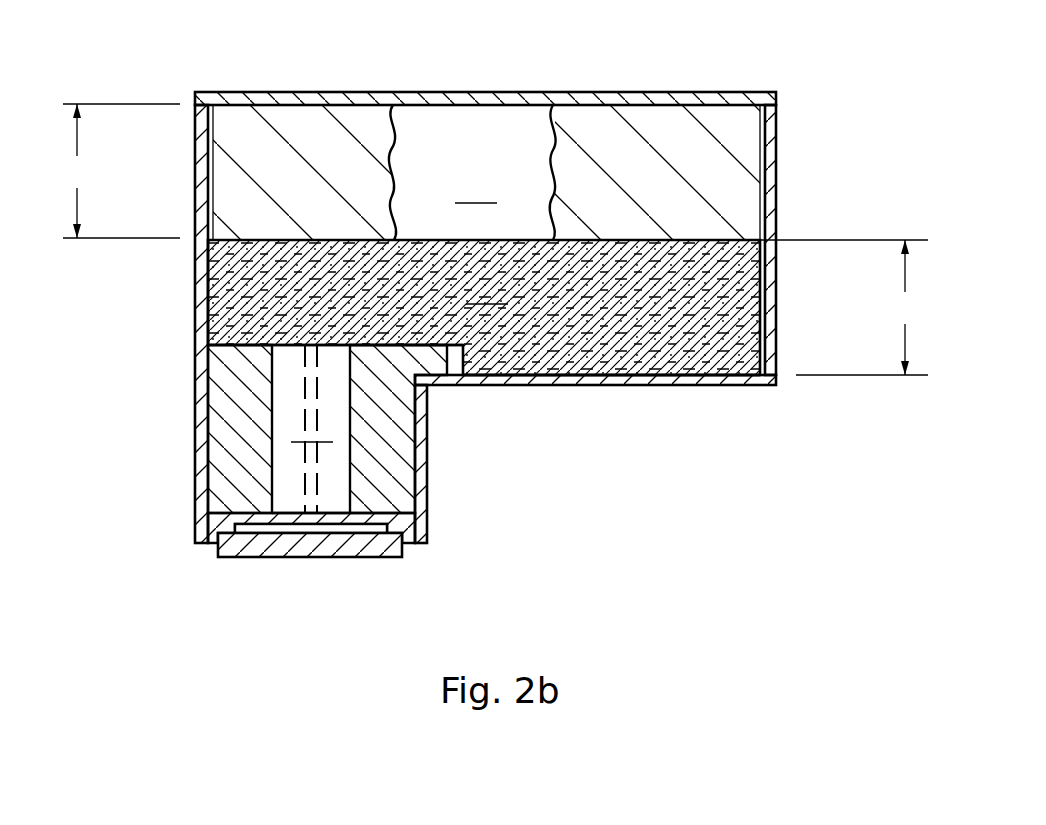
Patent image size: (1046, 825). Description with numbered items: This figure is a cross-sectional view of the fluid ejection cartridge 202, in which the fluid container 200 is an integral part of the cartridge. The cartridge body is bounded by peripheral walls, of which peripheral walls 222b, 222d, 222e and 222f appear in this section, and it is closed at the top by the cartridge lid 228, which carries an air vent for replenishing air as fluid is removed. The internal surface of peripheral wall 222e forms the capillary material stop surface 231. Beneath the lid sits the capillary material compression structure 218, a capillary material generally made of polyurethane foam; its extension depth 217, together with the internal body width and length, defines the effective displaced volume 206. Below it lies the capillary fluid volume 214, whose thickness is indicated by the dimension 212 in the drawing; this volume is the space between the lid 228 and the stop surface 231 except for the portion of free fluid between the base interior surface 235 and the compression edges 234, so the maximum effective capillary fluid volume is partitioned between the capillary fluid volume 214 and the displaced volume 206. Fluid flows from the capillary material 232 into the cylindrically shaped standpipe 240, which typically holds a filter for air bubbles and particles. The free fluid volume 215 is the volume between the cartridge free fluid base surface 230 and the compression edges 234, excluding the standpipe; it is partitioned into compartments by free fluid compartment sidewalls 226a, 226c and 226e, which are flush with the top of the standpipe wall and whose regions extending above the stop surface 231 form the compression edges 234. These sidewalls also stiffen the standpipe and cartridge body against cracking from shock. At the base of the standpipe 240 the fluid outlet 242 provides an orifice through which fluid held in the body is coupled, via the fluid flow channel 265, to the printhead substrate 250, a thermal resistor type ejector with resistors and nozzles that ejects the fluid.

The fluid container 200 is at (790, 248).
The fluid ejection cartridge 202 is at (490, 282).
The effective displaced volume 206 is at (482, 124).
The thickness of encapsulant layer 212 is at (852, 307).
The capillary fluid volume 214 is at (481, 234).
The free fluid volume 215 is at (306, 436).
The extension depth 217 is at (120, 171).
The capillary material 218 is at (330, 135).
The peripheral wall 222b is at (772, 140).
The peripheral wall 222d is at (197, 310).
The peripheral wall 222e is at (745, 387).
The peripheral wall 222f is at (428, 458).
The free fluid compartment sidewall 226a is at (225, 400).
The free fluid compartment sidewall 226c is at (418, 490).
The free fluid compartment sidewall 226e is at (432, 388).
The cartridge lid 228 is at (283, 92).
The cartridge free fluid base surface 230 is at (213, 513).
The capillary material stop surface 231 is at (737, 368).
The capillary material 232 is at (558, 337).
The compression edges 234 is at (400, 345).
The base interior surface 235 is at (603, 372).
The standpipe 240 is at (312, 429).
The fluid outlet 242 is at (297, 517).
The printhead substrate 250 is at (283, 535).
The fluid flow channel 265 is at (318, 528).